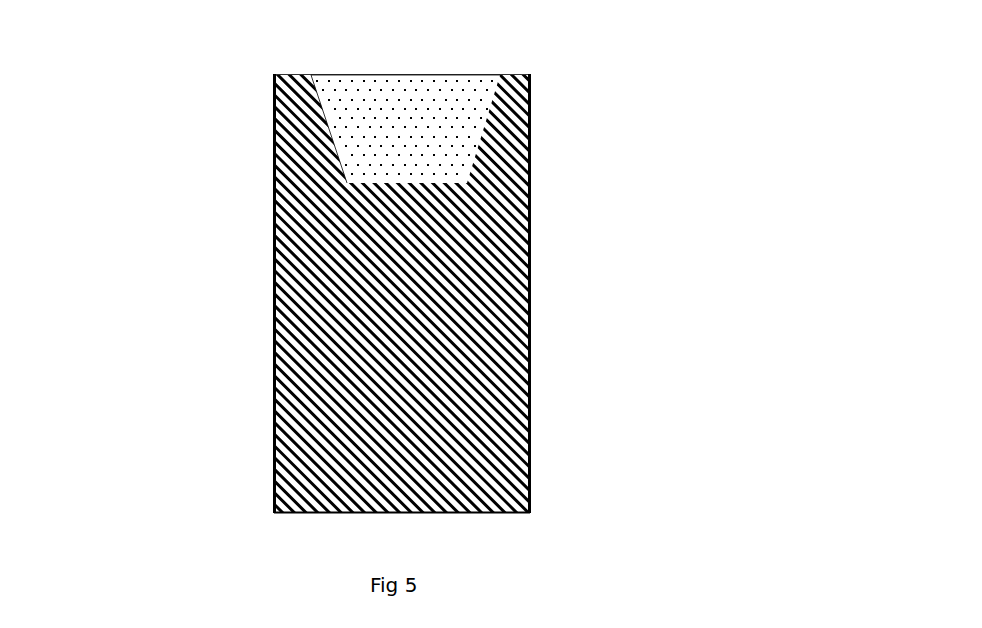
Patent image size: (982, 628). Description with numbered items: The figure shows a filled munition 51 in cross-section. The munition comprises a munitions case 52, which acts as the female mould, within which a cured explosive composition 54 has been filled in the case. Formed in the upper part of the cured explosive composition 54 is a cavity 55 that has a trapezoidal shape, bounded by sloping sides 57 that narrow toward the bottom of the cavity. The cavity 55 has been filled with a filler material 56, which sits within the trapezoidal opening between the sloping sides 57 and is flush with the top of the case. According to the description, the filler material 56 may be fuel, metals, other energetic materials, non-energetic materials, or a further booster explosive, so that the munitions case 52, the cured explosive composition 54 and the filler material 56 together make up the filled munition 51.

The filled munition 51 is at (246, 319).
The munitions case 52 is at (533, 250).
The cured explosive composition 54 is at (493, 362).
The cavity 55 is at (440, 100).
The filler material 56 is at (347, 91).
The sloping sides 57 is at (320, 125).